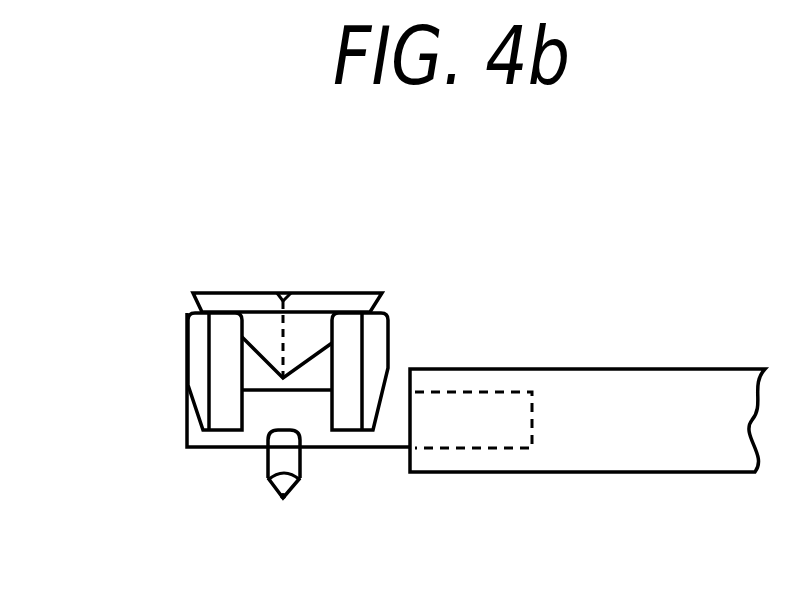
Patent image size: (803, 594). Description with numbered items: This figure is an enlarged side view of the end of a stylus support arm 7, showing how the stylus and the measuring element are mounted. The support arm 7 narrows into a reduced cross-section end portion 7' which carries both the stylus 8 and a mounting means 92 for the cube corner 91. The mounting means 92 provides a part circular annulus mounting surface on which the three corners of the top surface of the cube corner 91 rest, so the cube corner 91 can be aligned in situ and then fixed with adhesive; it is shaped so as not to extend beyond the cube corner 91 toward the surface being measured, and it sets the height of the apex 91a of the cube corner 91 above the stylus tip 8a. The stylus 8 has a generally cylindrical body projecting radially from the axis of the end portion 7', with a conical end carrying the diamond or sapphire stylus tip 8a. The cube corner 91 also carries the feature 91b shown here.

The stylus support arm 7 is at (587, 371).
The end portion 7' is at (298, 447).
The stylus 8 is at (278, 461).
The stylus tip 8a is at (283, 500).
The cube corner 91 is at (338, 300).
The apex 91a is at (280, 380).
The left support block 91b is at (225, 291).
The mounting means 92 is at (373, 333).